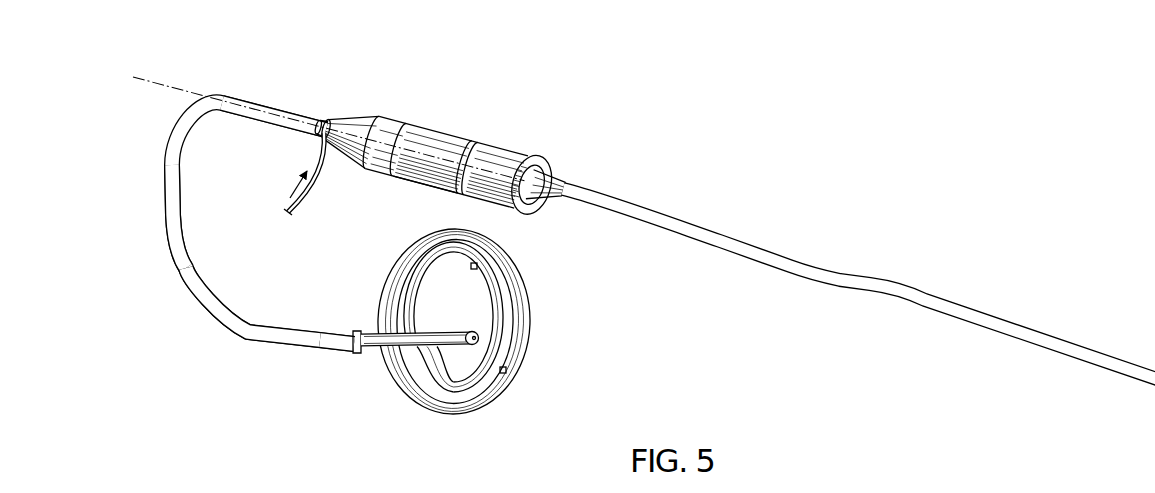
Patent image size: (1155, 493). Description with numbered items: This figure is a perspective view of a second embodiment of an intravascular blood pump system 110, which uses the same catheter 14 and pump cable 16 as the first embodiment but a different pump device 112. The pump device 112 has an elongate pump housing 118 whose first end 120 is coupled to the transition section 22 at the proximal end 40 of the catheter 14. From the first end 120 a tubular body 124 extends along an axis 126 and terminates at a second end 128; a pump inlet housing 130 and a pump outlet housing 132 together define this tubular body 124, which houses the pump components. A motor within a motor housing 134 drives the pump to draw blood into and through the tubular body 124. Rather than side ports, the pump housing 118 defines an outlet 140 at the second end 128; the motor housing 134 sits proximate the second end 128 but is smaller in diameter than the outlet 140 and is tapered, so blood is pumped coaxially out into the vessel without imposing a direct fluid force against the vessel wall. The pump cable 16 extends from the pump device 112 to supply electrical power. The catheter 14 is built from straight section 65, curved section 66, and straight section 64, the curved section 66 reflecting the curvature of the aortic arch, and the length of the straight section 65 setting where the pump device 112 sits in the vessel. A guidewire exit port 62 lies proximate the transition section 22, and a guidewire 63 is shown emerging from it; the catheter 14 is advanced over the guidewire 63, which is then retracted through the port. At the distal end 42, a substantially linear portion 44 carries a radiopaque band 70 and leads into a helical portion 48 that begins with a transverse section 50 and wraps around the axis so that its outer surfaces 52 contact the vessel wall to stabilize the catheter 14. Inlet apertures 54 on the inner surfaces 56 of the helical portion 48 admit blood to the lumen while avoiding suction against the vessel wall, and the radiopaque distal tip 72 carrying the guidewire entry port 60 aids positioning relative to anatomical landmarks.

The intravascular blood pump system 110 is at (644, 260).
The pump device 112 is at (446, 152).
The elongate pump housing 118 is at (495, 139).
The first end 120 is at (400, 120).
The tubular body 124 is at (433, 147).
The axis 126 is at (160, 84).
The second end 128 is at (535, 158).
The pump inlet housing 130 is at (413, 189).
The pump outlet housing 132 is at (470, 205).
The motor housing 134 is at (554, 206).
The outlet 140 is at (551, 170).
The catheter 14 is at (189, 213).
The pump cable 16 is at (795, 262).
The transition section 22 is at (372, 116).
The proximal end 40 is at (334, 126).
The guidewire exit port 62 is at (314, 119).
The guidewire 63 is at (307, 199).
The straight section 65 is at (270, 105).
The curved section 66 is at (192, 292).
The straight section 64 is at (270, 341).
The substantially linear portion 44 is at (340, 333).
The radiopaque band 70 is at (357, 331).
The distal end 42 is at (544, 320).
The helical portion 48 is at (457, 421).
The inner surfaces 56 is at (500, 316).
The outer surfaces 52 is at (410, 263).
The transverse section 50 is at (417, 362).
The inlet apertures 54 is at (470, 268).
The guidewire entry port 60 is at (472, 331).
The distal tip 72 is at (468, 331).